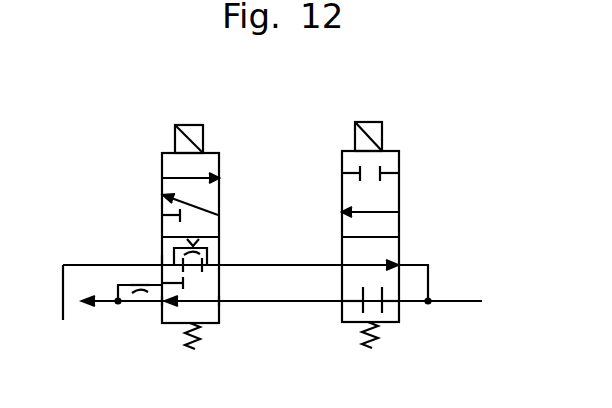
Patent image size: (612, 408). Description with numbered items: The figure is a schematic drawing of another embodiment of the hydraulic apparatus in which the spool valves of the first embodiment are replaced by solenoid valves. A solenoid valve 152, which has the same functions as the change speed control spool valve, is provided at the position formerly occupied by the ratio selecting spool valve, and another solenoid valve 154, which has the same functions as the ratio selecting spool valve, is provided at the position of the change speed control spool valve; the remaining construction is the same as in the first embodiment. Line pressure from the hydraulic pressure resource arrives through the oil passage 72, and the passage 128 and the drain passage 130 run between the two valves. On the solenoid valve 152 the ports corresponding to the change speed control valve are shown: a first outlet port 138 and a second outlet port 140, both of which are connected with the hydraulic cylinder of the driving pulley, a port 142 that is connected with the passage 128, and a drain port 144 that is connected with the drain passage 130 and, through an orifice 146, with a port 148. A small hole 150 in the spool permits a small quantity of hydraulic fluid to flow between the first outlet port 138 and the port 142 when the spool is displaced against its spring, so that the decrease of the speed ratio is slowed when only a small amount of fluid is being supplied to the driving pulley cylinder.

The oil passage 72 is at (63, 296).
The passage 128 is at (317, 263).
The drain passage 130 is at (312, 303).
The first outlet port 138 is at (220, 262).
The second outlet port 140 is at (222, 303).
The port 142 is at (161, 260).
The drain port 144 is at (160, 306).
The orifice 146 is at (134, 282).
The port 148 is at (155, 285).
The small hole 150 is at (195, 238).
The solenoid valve 152 is at (233, 165).
The solenoid valve 154 is at (410, 165).